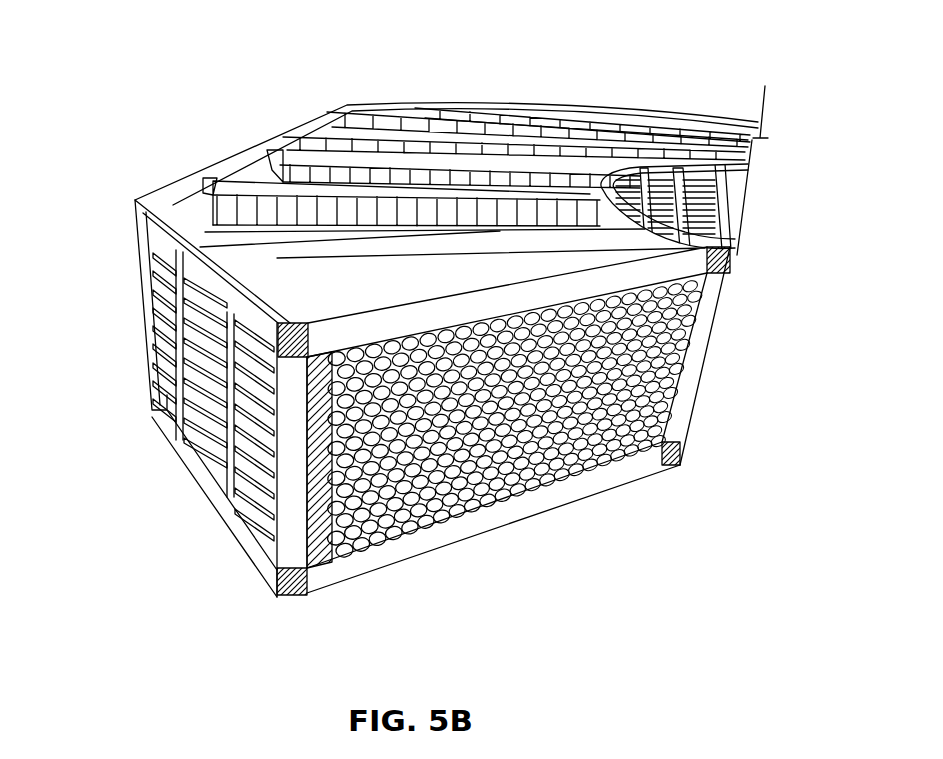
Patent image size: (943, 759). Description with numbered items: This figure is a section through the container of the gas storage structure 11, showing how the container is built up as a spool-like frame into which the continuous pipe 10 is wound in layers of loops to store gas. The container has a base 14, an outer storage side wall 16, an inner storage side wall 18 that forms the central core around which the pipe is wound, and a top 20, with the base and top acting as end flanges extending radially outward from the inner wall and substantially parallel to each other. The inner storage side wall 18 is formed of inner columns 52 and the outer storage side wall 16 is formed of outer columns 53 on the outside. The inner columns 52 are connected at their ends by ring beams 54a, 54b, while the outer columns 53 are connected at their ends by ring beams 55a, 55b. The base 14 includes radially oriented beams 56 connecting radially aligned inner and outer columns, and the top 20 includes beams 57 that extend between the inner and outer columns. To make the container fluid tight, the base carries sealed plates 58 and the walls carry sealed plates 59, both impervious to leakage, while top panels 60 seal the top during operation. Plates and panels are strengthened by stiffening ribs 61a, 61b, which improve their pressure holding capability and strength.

The continuous pipe 10 is at (673, 390).
The gas storage structure 11 is at (617, 95).
The base 14 is at (568, 507).
The outer storage side wall 16 is at (140, 333).
The inner storage side wall 18 is at (743, 208).
The top 20 is at (482, 110).
The columns 52 is at (700, 340).
The columns 53 is at (187, 420).
The ring beam 54a is at (707, 270).
The ring beam 54b is at (683, 457).
The ring beam 55a is at (152, 202).
The ring beam 55b is at (277, 600).
The beams 56 is at (447, 530).
The beams 57 is at (457, 130).
The plates 58 is at (320, 550).
The plates 59 is at (217, 473).
The top panels 60 is at (227, 208).
The stiffening ribs 61a is at (240, 462).
The stiffening ribs 61b is at (282, 168).